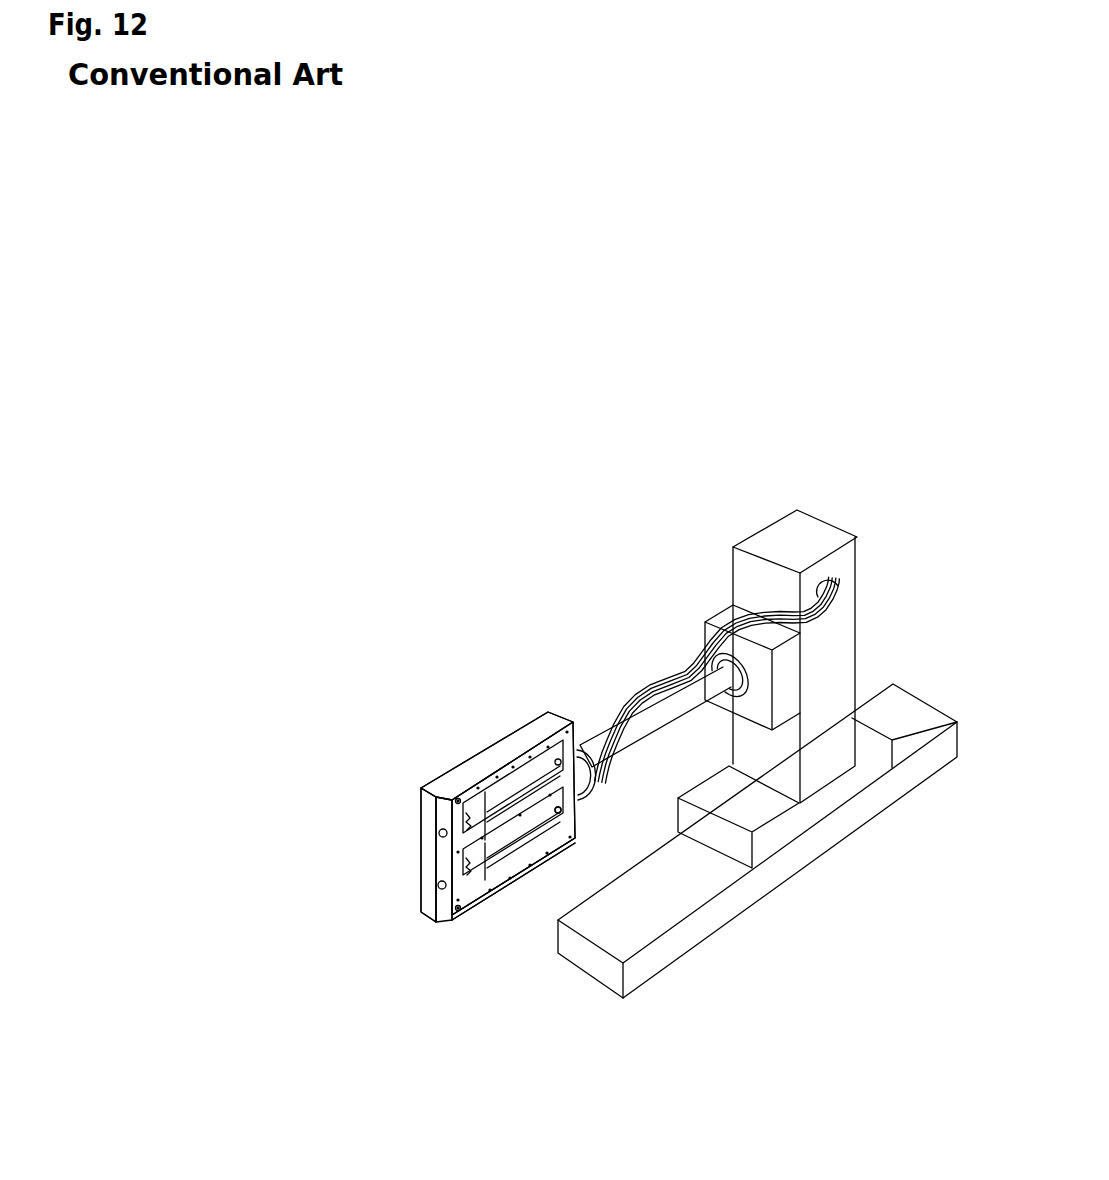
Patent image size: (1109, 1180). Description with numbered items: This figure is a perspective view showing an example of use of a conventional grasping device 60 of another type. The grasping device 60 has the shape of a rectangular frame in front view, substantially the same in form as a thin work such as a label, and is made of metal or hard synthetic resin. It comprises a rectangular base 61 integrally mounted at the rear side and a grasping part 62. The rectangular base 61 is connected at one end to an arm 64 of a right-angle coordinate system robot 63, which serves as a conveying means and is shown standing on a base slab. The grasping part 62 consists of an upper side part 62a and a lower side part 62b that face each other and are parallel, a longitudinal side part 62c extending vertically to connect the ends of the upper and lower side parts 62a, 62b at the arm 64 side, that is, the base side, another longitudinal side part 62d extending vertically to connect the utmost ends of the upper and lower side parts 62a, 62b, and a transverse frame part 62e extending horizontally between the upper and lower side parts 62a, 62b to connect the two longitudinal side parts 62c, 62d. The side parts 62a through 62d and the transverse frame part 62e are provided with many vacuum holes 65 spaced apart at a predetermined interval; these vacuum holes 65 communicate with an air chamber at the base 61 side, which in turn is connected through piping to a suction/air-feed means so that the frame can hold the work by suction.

The grasping device 60 is at (471, 734).
The rectangular base 61 is at (419, 856).
The grasping part 62 is at (485, 796).
The upper side part 62a is at (524, 733).
The lower side part 62b is at (522, 877).
The longitudinal side part 62c is at (577, 748).
The longitudinal side part 62d is at (437, 863).
The transverse frame part 62e is at (534, 808).
The right-angle coordinate system robot 63 is at (805, 522).
The arm 64 is at (695, 700).
The vacuum holes 65 is at (458, 790).